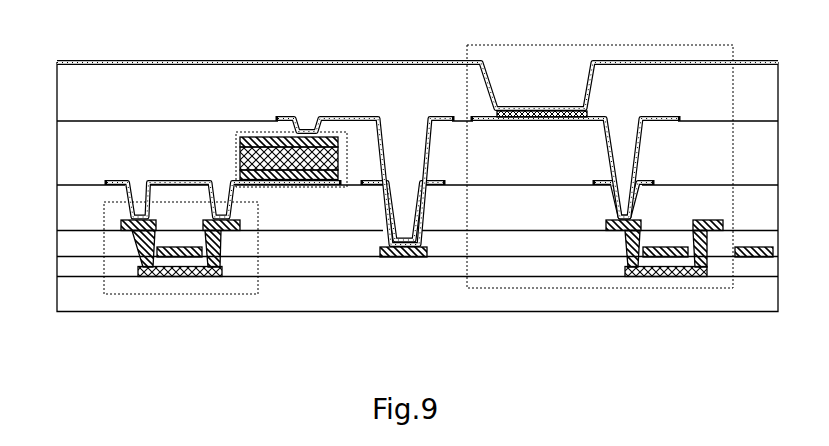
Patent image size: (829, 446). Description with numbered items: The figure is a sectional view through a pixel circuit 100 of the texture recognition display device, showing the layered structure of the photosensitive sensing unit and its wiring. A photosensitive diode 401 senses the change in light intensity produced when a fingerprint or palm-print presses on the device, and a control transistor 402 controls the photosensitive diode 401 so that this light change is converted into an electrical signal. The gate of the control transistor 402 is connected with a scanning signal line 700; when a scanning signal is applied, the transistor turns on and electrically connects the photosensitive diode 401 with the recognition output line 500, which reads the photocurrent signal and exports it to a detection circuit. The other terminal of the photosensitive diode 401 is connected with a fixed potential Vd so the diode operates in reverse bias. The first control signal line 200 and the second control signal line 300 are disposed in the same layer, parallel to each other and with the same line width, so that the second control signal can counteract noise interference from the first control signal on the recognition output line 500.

The pixel circuit 100 is at (577, 288).
The first control signal line 200 is at (670, 257).
The second control signal line 300 is at (747, 257).
The photosensitive diode 401 is at (300, 187).
The control transistor 402 is at (212, 294).
The recognition output line 500 is at (122, 192).
The scanning signal line 700 is at (182, 257).
The fixed potential Vd is at (412, 257).